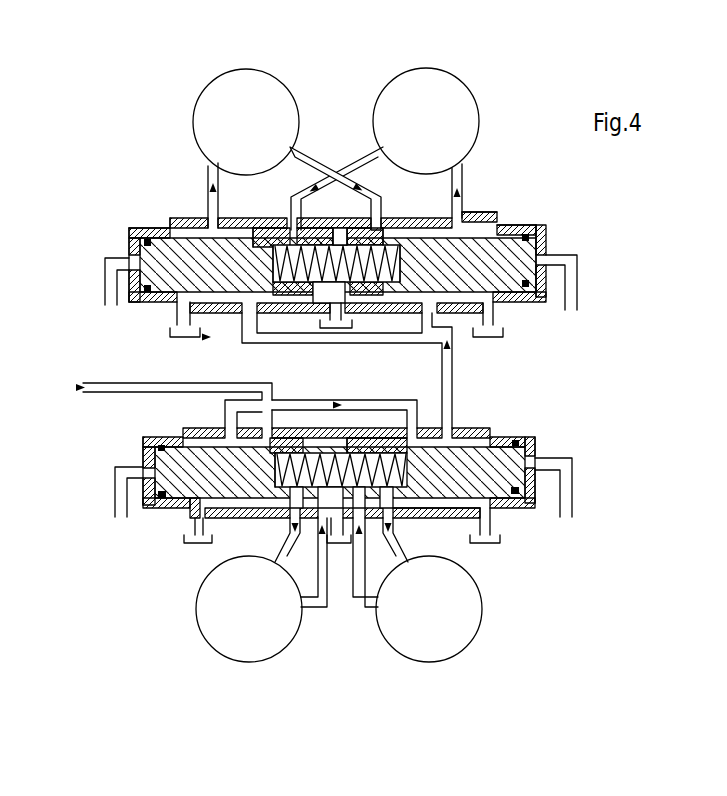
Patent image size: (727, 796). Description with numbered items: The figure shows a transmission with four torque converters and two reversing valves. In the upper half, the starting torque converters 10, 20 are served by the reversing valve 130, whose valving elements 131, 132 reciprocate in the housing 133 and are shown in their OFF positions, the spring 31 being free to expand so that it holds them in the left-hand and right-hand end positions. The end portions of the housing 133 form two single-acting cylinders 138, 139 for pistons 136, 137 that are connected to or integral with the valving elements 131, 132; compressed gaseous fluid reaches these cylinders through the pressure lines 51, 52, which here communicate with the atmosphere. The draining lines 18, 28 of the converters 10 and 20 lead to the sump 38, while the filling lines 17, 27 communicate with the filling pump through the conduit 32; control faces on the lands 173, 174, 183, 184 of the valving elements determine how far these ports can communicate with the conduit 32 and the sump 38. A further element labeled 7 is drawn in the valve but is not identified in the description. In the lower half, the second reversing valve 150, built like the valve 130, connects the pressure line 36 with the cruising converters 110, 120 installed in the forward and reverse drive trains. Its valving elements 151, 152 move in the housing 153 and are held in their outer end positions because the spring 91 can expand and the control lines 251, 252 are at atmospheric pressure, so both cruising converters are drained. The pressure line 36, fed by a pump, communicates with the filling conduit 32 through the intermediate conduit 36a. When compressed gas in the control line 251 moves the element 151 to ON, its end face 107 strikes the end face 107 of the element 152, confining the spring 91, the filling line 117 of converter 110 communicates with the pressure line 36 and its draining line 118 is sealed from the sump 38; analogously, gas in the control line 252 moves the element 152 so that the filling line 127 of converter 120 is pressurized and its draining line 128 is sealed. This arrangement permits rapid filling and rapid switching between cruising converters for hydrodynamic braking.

The torque converter 10 is at (264, 151).
The torque converter 20 is at (437, 148).
The filling line 17 is at (212, 182).
The draining line 18 is at (300, 150).
The filling line 27 is at (462, 177).
The draining line 28 is at (359, 160).
The valve spring 7 is at (335, 240).
The reversing valve 130 is at (589, 216).
The valving element 131 is at (236, 313).
The valving element 132 is at (455, 260).
The valve housing 133 is at (498, 313).
The piston 136 is at (148, 238).
The piston 137 is at (537, 233).
The single-acting cylinder 138 is at (127, 237).
The single-acting cylinder 139 is at (547, 240).
The land 173 is at (183, 211).
The land 174 is at (481, 214).
The land 183 is at (402, 233).
The land 184 is at (266, 228).
The spring 31 is at (335, 268).
The filling conduit 32 is at (441, 334).
The sump 38 is at (500, 557).
The pressure line 51 is at (107, 287).
The pressure line 52 is at (573, 297).
The pressure line 36 is at (116, 391).
The intermediate conduit 36a is at (362, 391).
The compression spring 91 is at (303, 448).
The end face 107 is at (343, 447).
The second reversing valve 150 is at (551, 424).
The valving element 151 is at (165, 497).
The valving element 152 is at (514, 494).
The valve housing 153 is at (435, 509).
The control line 251 is at (115, 498).
The control line 252 is at (572, 497).
The filling line 117 is at (283, 542).
The draining line 118 is at (312, 608).
The filling line 127 is at (387, 538).
The draining line 128 is at (372, 600).
The torque converter 110 is at (210, 632).
The torque converter 120 is at (465, 632).